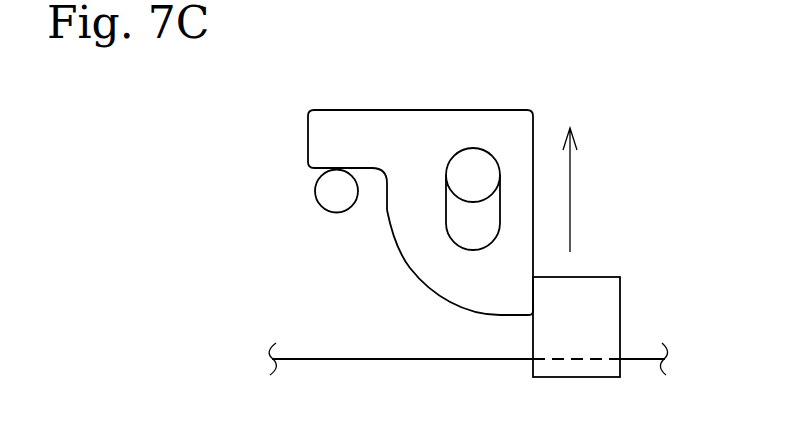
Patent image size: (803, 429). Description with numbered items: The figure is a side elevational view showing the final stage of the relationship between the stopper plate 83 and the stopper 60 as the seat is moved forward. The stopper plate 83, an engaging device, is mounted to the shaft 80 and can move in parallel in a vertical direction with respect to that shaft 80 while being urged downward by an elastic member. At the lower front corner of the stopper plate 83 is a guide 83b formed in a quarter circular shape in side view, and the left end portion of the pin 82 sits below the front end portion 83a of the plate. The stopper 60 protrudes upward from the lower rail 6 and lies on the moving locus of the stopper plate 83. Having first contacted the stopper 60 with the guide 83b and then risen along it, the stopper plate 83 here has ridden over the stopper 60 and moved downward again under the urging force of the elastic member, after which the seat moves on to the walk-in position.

The lower rail 6 is at (640, 342).
The stopper 60 is at (593, 300).
The shaft 80 is at (467, 162).
The pin 82 is at (335, 198).
The stopper plate 83 is at (442, 187).
The front end portion 83a is at (342, 128).
The guide 83b is at (423, 252).